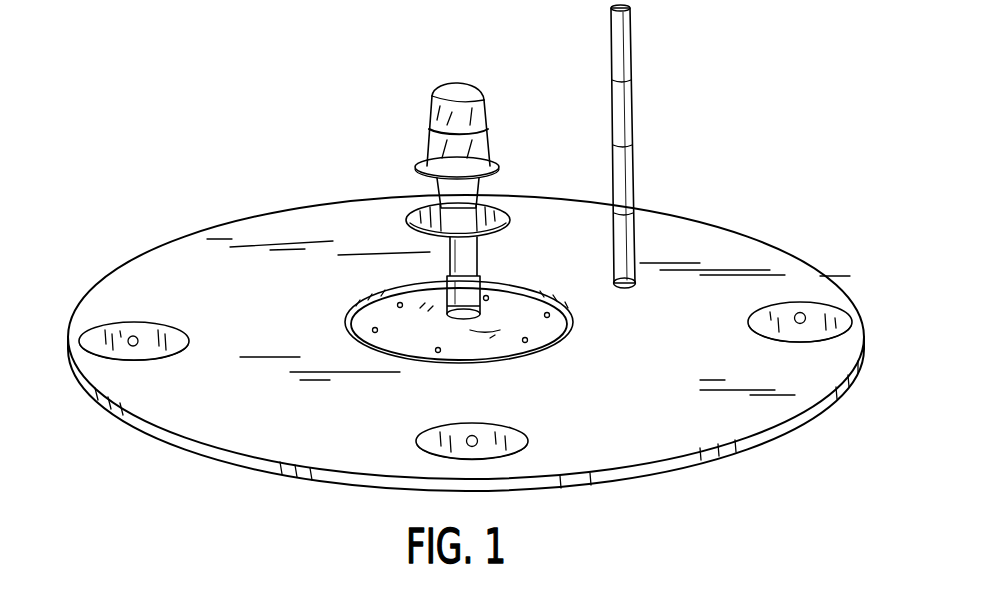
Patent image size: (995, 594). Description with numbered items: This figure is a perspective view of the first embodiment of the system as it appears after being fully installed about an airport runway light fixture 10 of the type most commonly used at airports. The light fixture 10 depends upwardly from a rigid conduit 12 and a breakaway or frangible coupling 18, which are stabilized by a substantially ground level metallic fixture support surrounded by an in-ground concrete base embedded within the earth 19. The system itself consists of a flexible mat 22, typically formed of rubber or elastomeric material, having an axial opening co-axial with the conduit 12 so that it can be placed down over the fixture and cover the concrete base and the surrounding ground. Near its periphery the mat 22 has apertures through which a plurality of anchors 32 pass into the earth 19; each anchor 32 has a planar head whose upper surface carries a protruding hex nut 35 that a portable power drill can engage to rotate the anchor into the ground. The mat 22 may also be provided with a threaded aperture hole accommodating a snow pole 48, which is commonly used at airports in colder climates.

The airport runway light fixture 10 is at (489, 134).
The rigid conduit 12 is at (470, 253).
The breakaway coupling 18 is at (412, 287).
The earth 19 is at (902, 279).
The flexible mat 22 is at (720, 246).
The anchor 32 is at (95, 338).
The hex nut 35 is at (800, 326).
The snow pole 48 is at (620, 103).